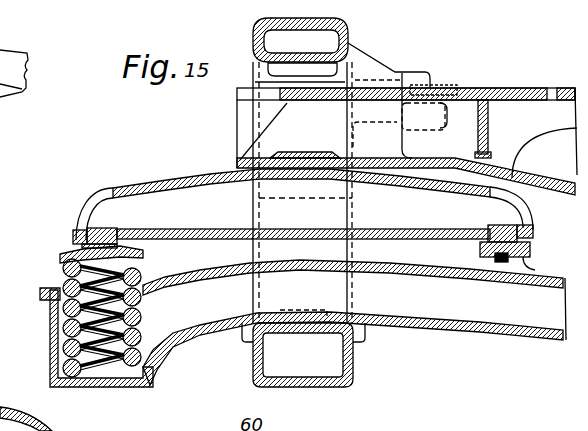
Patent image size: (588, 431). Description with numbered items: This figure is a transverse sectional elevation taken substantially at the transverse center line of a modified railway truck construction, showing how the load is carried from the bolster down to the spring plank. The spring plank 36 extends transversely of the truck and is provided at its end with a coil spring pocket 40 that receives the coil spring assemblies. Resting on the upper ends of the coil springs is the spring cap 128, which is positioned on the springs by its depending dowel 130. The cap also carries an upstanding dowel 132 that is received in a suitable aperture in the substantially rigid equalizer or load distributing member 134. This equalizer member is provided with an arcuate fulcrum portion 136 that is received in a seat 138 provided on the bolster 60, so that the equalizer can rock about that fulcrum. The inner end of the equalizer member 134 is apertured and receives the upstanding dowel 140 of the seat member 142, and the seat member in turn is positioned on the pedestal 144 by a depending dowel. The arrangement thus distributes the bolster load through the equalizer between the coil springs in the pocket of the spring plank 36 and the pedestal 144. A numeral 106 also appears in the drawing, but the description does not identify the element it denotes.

The spring plank 36 is at (465, 326).
The coil spring pocket 40 is at (58, 307).
The bolster 60 is at (481, 87).
The stop member 106 is at (480, 258).
The spring cap 128 is at (70, 248).
The depending dowel 130 is at (140, 244).
The upstanding dowel 132 is at (104, 227).
The equalizer or load distributing member 134 is at (194, 178).
The arcuate fulcrum portion 136 is at (300, 138).
The seat 138 is at (311, 153).
The upstanding dowel 140 is at (507, 222).
The seat member 142 is at (530, 238).
The pedestal 144 is at (530, 258).